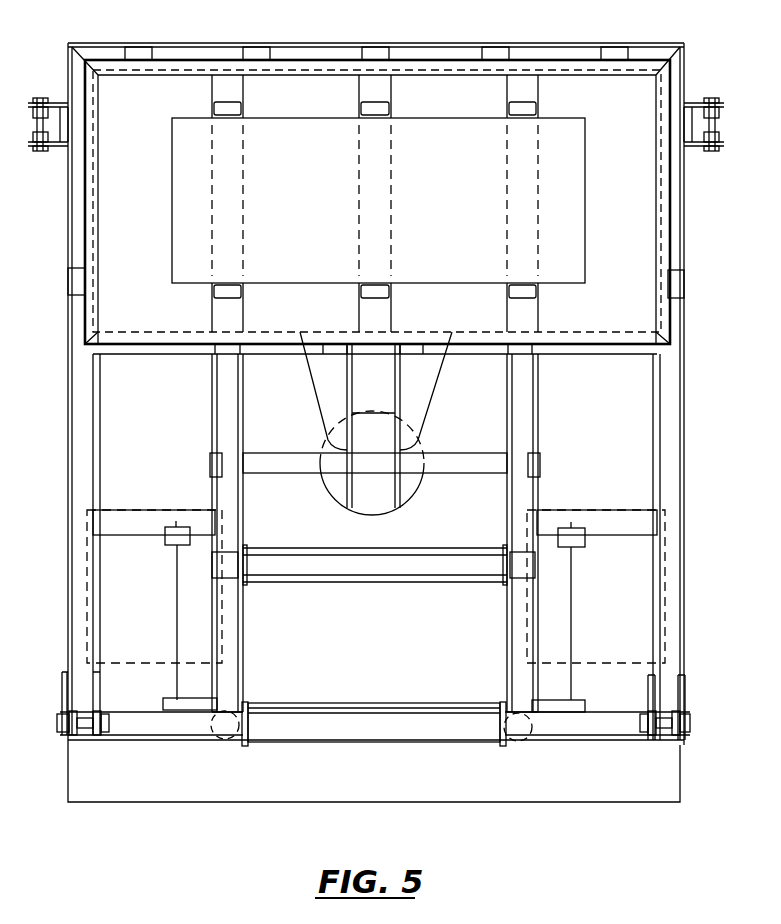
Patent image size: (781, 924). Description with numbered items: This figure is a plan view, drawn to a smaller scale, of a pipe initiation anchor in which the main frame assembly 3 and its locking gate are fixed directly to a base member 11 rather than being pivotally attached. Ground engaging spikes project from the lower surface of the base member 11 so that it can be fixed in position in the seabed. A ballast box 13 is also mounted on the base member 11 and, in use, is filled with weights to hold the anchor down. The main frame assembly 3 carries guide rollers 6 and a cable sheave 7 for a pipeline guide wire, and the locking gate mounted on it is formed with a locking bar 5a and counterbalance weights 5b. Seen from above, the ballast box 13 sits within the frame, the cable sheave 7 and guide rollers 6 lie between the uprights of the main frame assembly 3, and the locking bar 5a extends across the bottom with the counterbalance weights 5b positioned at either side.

The base member 11 is at (80, 410).
The ballast box 13 is at (172, 184).
The main frame assembly 3 is at (222, 413).
The cable sheave 7 is at (338, 490).
The guide rollers 6 is at (322, 720).
The locking bar 5a is at (410, 700).
The counterbalance weights 5b is at (170, 543).